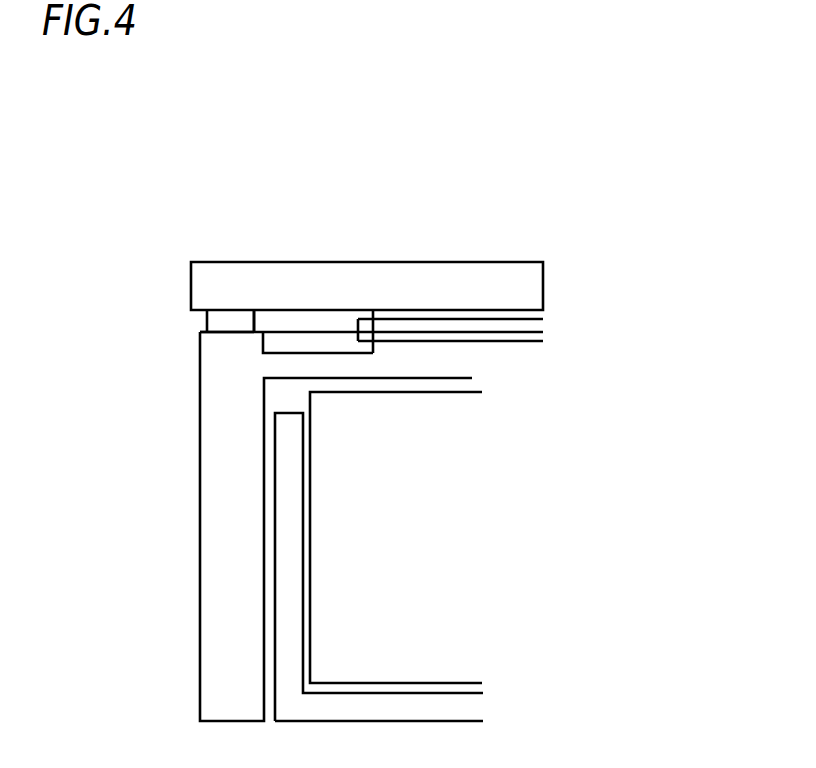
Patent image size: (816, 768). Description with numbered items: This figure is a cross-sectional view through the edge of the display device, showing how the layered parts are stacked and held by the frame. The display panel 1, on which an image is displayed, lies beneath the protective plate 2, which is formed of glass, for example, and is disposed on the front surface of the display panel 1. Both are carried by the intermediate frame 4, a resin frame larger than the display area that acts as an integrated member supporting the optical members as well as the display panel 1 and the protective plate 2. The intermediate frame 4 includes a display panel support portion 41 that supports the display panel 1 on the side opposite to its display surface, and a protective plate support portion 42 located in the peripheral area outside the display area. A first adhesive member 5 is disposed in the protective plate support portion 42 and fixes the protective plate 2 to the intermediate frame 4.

The display panel 1 is at (410, 330).
The protective plate 2 is at (487, 282).
The intermediate frame 4 is at (235, 550).
The display panel support portion 41 is at (311, 350).
The protective plate support portion 42 is at (242, 332).
The first adhesive member 5 is at (217, 320).